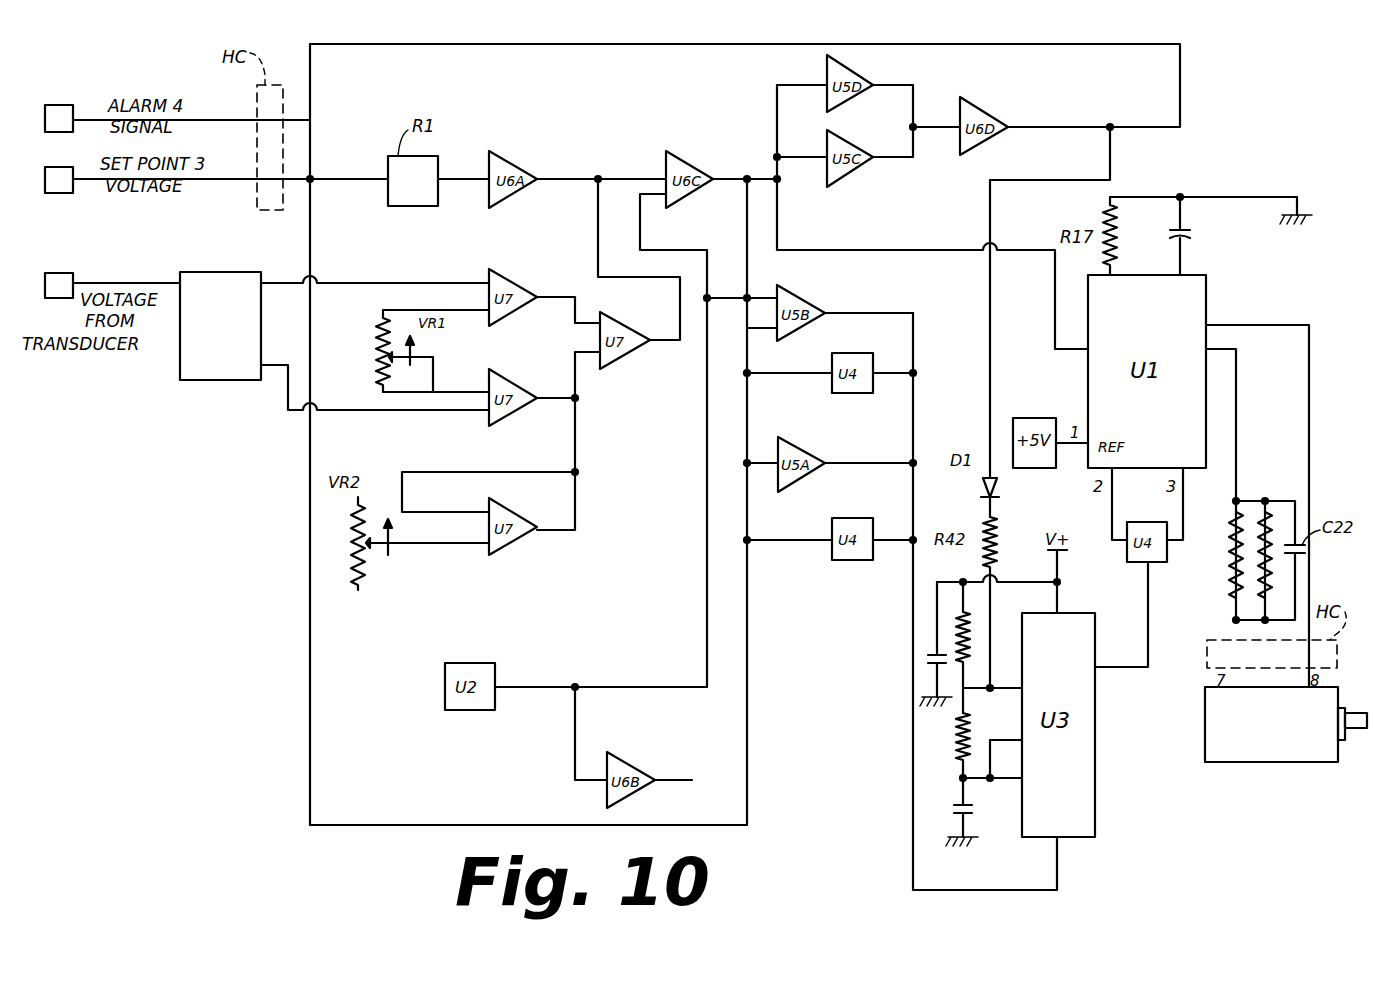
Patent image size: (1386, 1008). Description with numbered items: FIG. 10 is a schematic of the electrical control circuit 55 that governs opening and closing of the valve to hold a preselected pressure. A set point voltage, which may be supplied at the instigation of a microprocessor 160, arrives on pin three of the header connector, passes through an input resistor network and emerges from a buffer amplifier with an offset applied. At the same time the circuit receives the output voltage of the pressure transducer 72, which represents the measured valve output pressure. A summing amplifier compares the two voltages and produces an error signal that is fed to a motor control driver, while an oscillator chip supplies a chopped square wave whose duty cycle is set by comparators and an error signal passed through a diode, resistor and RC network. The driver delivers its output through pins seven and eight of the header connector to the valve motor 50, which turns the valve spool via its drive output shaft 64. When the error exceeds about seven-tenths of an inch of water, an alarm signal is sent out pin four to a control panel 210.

The control panel 210 is at (62, 105).
The microprocessor 160 is at (62, 193).
The pressure transducer 72 is at (60, 273).
The electrical control circuit 55 is at (1208, 144).
The valve motor 50 is at (1270, 765).
The drive output shaft 64 is at (1357, 735).